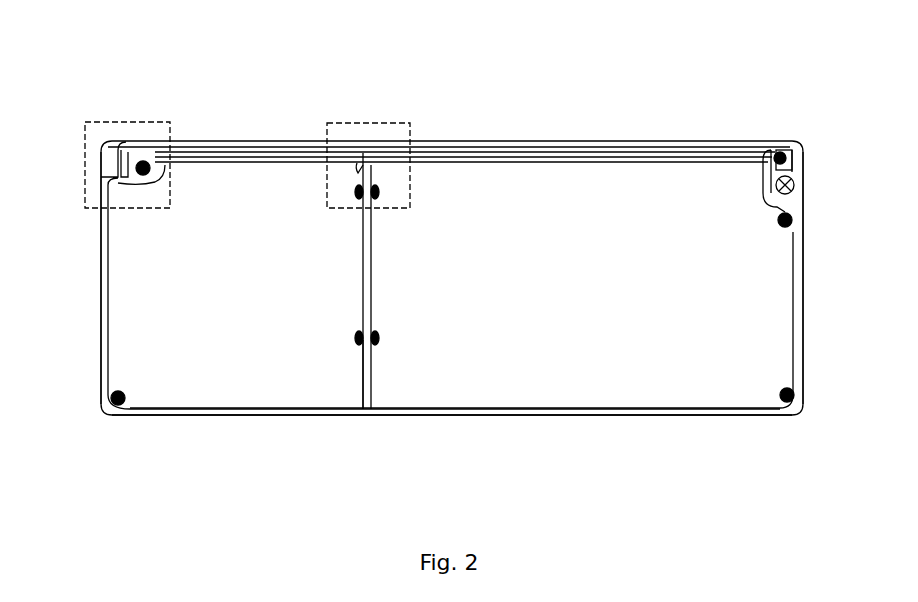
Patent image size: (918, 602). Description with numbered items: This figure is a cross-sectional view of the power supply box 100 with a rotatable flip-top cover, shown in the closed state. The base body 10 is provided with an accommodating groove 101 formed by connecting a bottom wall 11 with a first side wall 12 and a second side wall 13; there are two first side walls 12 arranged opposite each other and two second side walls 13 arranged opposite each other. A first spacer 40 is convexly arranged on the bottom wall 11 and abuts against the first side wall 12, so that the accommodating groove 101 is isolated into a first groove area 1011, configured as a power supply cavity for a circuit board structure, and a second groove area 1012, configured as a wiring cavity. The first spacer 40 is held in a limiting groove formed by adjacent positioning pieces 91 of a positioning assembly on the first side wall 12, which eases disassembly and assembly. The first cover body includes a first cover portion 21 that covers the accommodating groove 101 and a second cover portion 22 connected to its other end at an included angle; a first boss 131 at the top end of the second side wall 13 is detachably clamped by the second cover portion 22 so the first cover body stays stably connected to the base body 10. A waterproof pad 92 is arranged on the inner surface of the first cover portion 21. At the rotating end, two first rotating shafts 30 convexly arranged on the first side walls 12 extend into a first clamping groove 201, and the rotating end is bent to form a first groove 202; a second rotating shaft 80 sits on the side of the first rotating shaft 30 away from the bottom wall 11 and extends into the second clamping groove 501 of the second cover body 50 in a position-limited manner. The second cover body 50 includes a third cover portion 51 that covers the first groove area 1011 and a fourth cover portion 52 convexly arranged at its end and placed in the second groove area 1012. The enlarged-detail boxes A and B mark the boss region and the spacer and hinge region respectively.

The power supply box 100 is at (463, 26).
The base body 10 is at (237, 483).
The bottom wall 11 is at (148, 407).
The first side wall 12 is at (220, 395).
The second side wall 13 is at (103, 370).
The first cover portion 21 is at (561, 147).
The second cover portion 22 is at (104, 168).
The first boss 131 is at (127, 152).
The second cover body 50 is at (368, 90).
The third cover portion 51 is at (393, 150).
The fourth cover portion 52 is at (343, 172).
The accommodating groove 101 is at (495, 100).
The second groove area 1012 is at (360, 272).
The first groove area 1011 is at (515, 192).
The first spacer 40 is at (368, 373).
The positioning piece 91 is at (378, 343).
The waterproof pad 92 is at (618, 145).
The second clamping groove 501 is at (770, 163).
The second rotating shaft 80 is at (779, 150).
The first groove 202 is at (797, 152).
The first clamping groove 201 is at (792, 184).
The first rotating shaft 30 is at (792, 200).
The detail A is at (98, 122).
The detail B is at (300, 158).